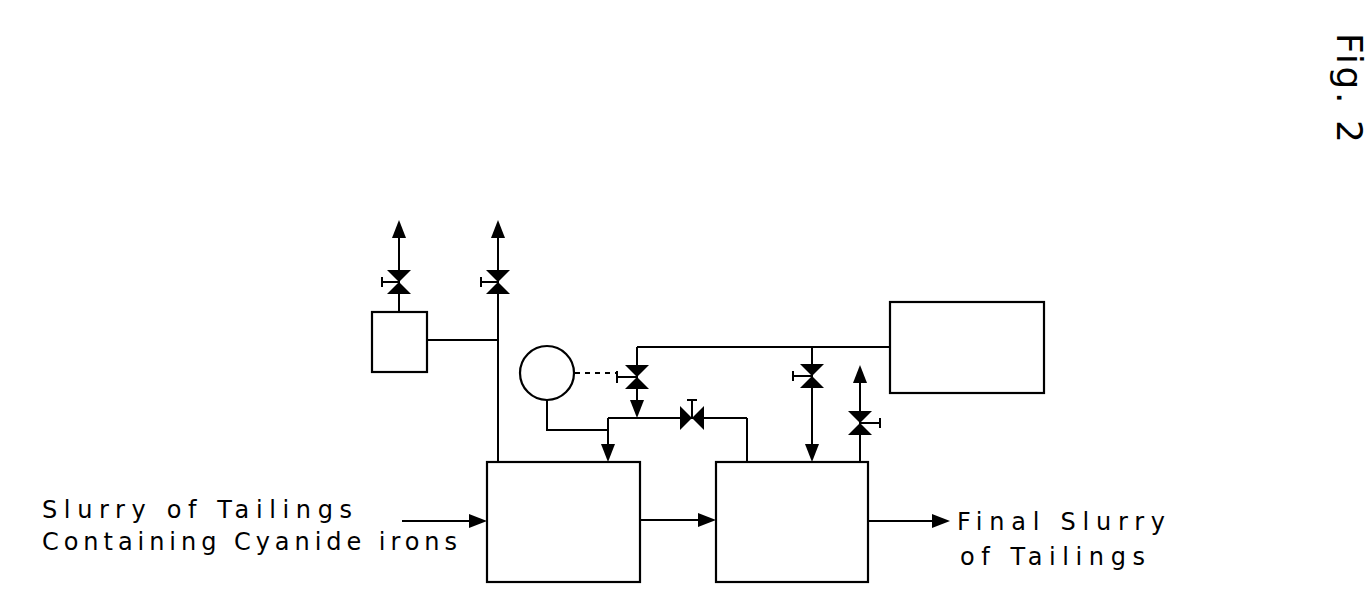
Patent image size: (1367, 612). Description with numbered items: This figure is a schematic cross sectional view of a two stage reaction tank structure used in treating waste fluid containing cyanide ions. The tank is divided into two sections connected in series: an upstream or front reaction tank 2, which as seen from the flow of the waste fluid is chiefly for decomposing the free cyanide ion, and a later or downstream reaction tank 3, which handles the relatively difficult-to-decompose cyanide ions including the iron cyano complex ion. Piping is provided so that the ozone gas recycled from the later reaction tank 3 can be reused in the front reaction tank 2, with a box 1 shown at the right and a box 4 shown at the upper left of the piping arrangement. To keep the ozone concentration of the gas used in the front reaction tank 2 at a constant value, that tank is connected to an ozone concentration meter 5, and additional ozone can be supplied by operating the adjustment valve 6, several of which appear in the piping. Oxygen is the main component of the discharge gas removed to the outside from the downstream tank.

The hydrogen peroxide / reagent supply tank 1 is at (967, 347).
The front reaction tank 2 is at (563, 522).
The later reaction tank 3 is at (792, 522).
The gas supply / ozone generator 4 is at (399, 342).
The ozone concentration meter 5 is at (547, 373).
The adjustment valve 6 is at (631, 365).